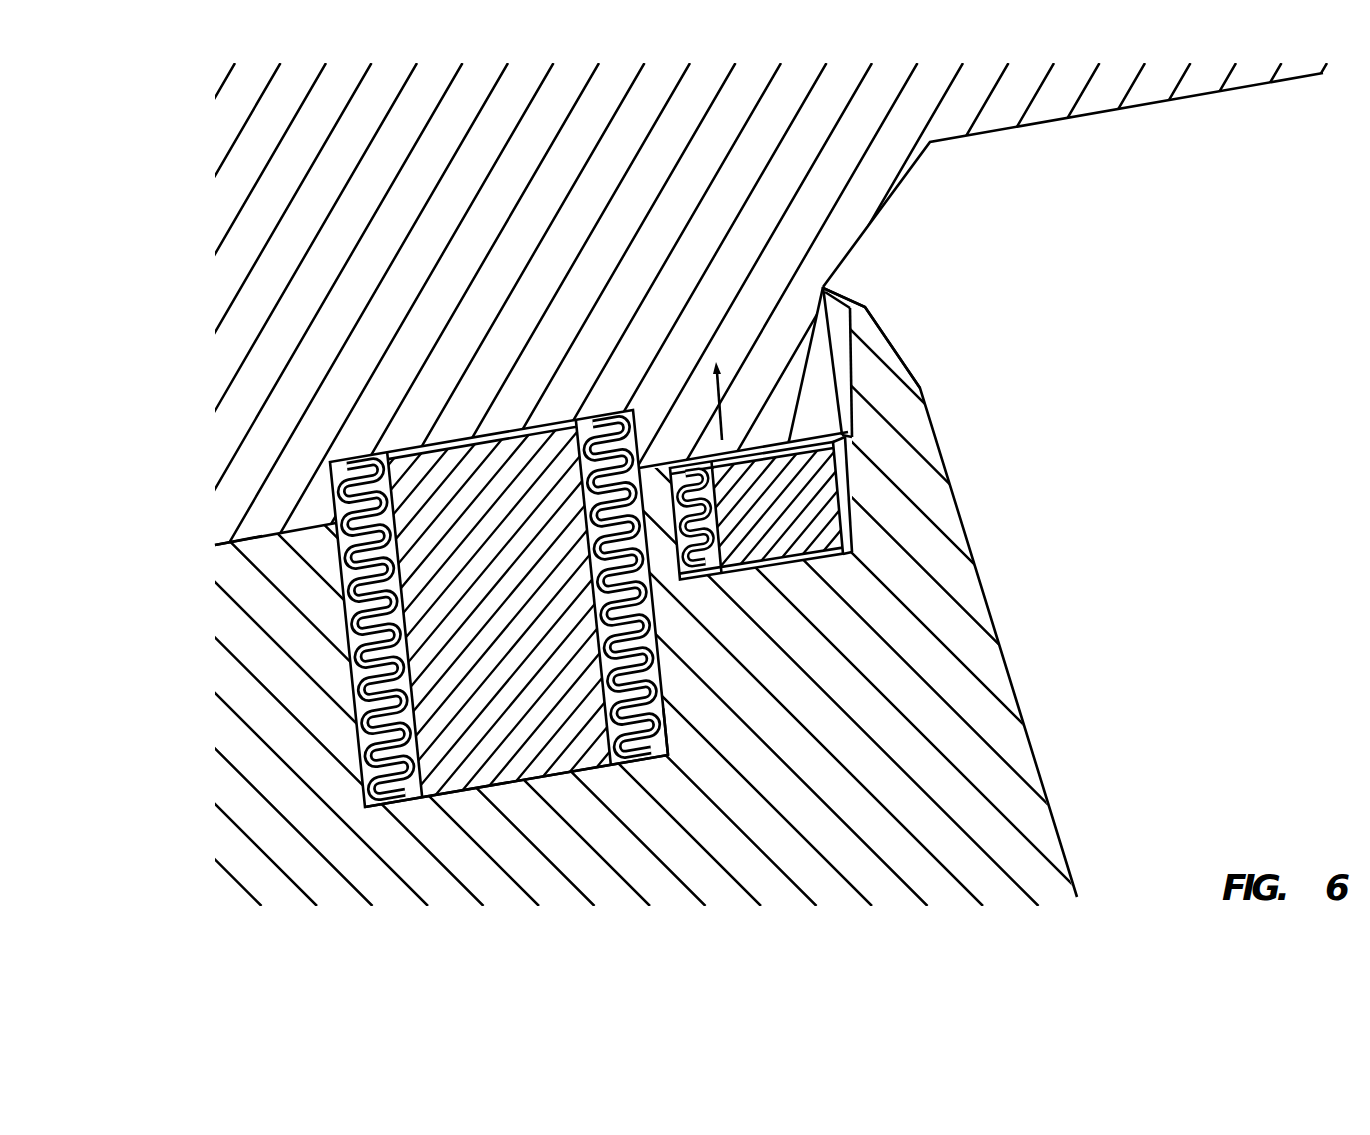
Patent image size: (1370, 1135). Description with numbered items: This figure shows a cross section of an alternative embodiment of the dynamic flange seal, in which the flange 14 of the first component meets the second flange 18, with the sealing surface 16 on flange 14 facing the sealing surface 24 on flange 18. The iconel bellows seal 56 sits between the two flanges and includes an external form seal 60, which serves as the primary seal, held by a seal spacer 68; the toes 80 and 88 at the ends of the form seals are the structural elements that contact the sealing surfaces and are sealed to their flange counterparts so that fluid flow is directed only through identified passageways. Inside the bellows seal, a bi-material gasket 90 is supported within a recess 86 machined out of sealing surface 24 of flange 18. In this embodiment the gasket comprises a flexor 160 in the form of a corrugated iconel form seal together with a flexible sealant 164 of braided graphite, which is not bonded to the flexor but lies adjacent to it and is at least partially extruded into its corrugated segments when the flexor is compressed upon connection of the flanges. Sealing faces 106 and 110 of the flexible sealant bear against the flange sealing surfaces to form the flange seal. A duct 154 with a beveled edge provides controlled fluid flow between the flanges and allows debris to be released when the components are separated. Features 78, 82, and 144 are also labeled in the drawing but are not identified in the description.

The flange 14 is at (277, 423).
The sealing surface 16 is at (218, 543).
The second flange 18 is at (269, 630).
The sealing surface 24 is at (252, 548).
The iconel bellows seal 56 is at (326, 715).
The external form seal 60 is at (347, 652).
The seal spacer 68 is at (502, 607).
The bottom wall 78 is at (372, 808).
The toe 80 is at (401, 813).
The outer wall 82 is at (632, 772).
The recess 86 is at (678, 512).
The toe 88 is at (648, 765).
The bi-material gasket 90 is at (860, 456).
The sealing face 106 is at (794, 466).
The sealing face 110 is at (792, 556).
The plate 144 is at (848, 350).
The duct 154 is at (876, 335).
The flexor 160 is at (683, 576).
The flexible sealant 164 is at (774, 515).